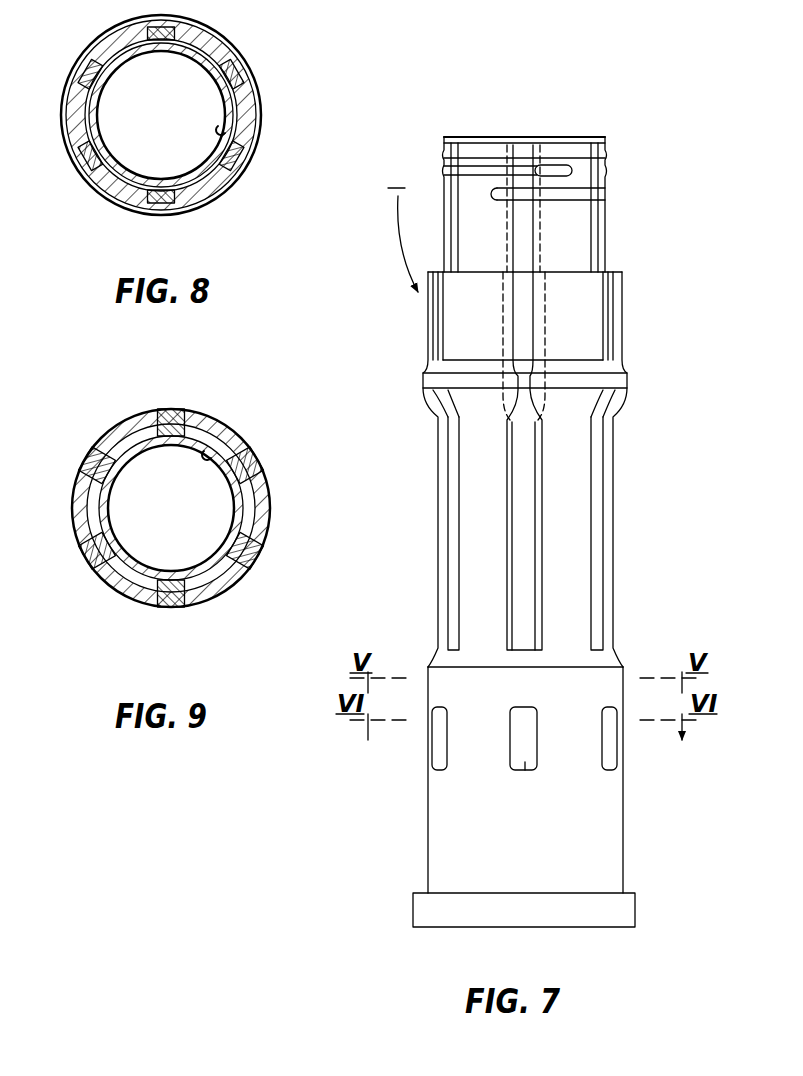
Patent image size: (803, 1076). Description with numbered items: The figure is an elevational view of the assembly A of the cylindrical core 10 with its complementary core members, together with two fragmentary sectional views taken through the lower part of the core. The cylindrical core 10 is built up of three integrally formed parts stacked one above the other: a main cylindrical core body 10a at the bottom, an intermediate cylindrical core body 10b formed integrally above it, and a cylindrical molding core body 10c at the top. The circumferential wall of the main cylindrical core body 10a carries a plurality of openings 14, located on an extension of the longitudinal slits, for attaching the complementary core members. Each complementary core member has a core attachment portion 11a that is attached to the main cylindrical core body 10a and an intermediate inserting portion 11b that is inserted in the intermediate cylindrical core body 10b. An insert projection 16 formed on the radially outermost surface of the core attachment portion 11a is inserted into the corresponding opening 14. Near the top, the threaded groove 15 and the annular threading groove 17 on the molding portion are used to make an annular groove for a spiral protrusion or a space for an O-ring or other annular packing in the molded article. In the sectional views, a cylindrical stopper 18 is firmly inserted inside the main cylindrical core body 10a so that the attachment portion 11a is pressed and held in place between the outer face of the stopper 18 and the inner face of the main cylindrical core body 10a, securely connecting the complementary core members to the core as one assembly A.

In FIG. 7, the cylindrical core 10 is at (430, 507).
In FIG. 8, the main cylindrical core body 10a is at (215, 200).
In FIG. 9, the main cylindrical core body 10a is at (212, 598).
In FIG. 7, the main cylindrical core body 10a is at (605, 818).
In FIG. 7, the intermediate cylindrical core body 10b is at (566, 464).
In FIG. 7, the cylindrical molding core body 10c is at (568, 228).
In FIG. 8, the core attachment portion 11a is at (227, 63).
In FIG. 7, the intermediate inserting portion 11b is at (528, 602).
In FIG. 9, the opening 14 is at (255, 547).
In FIG. 7, the opening 14 is at (512, 745).
In FIG. 7, the threaded groove 15 is at (555, 168).
In FIG. 9, the insert projection 16 is at (257, 460).
In FIG. 7, the insert projection 16 is at (525, 762).
In FIG. 7, the annular threading groove 17 is at (527, 170).
In FIG. 8, the cylindrical stopper 18 is at (223, 134).
In FIG. 9, the cylindrical stopper 18 is at (212, 452).
In FIG. 7, the assembly A is at (403, 227).